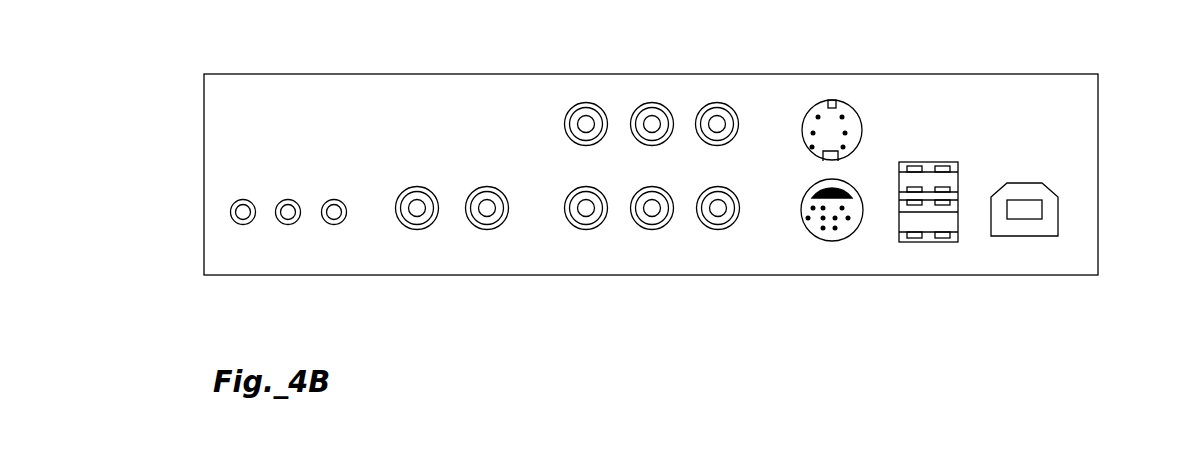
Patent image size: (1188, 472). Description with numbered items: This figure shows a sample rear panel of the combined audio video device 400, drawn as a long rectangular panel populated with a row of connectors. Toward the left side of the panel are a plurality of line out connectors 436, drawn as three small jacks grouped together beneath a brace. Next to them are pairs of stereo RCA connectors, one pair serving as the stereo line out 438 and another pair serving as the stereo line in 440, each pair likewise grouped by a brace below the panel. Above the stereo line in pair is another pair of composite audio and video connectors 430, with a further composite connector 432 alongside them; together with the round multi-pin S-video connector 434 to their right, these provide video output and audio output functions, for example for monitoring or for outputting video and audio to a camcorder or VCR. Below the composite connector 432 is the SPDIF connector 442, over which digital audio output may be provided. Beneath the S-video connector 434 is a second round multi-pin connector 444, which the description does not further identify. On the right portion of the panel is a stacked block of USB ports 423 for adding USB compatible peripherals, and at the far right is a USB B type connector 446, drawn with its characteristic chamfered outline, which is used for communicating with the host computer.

The combined device 400 is at (255, 73).
The composite audio and video connectors 430 is at (668, 90).
The composite audio and video connector 432 is at (716, 103).
The S-video connector 434 is at (829, 100).
The USB ports 423 is at (925, 162).
The USB B type connector 446 is at (1041, 183).
The line out connectors 436 is at (220, 248).
The stereo line out 438 is at (380, 258).
The stereo line in 440 is at (668, 258).
The SPDIF connector 442 is at (718, 227).
The DIN connector 444 is at (835, 241).